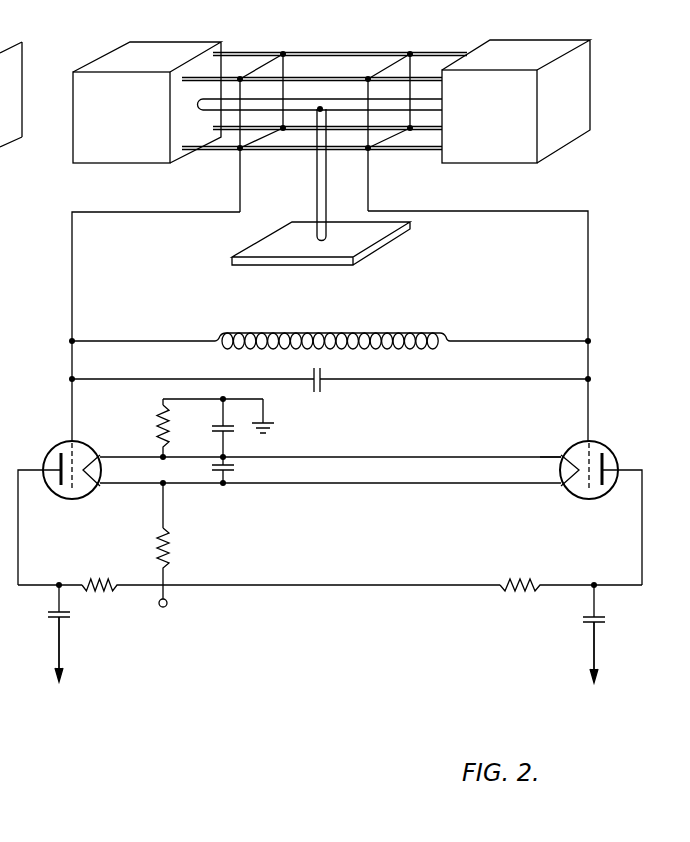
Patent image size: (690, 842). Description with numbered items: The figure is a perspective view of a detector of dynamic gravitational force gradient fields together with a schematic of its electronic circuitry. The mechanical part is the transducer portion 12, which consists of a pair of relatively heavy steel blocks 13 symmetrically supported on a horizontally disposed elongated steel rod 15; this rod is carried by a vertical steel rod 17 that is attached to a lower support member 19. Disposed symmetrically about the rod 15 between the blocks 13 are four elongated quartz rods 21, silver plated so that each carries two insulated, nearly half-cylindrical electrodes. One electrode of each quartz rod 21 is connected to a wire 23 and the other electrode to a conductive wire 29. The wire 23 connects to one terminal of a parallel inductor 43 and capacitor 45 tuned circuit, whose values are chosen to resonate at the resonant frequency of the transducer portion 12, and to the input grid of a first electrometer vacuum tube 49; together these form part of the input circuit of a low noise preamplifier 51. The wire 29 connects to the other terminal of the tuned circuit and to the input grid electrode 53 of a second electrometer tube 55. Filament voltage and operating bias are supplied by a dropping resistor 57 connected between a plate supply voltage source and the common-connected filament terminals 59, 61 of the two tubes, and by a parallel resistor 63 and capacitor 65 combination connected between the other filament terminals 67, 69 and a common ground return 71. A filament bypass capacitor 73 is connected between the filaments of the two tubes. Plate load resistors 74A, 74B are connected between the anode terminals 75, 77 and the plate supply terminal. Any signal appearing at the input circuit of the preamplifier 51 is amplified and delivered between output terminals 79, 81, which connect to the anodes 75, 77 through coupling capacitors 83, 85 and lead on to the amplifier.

The transducer portion 12 is at (338, 74).
The steel blocks 13 is at (163, 53).
The elongated steel rod 15 is at (302, 109).
The vertical steel rod 17 is at (317, 195).
The lower support member 19 is at (261, 240).
The quartz rods 21 is at (248, 74).
The wire 23 is at (168, 212).
The conductive wire 29 is at (497, 211).
The inductor 43 is at (262, 332).
The capacitor 45 is at (322, 371).
The first electrometer vacuum tube 49 is at (53, 450).
The low noise preamplifier 51 is at (308, 514).
The input grid electrode 53 is at (591, 441).
The second electrometer tube 55 is at (611, 449).
The dropping resistor 57 is at (170, 539).
The filament terminal 59 is at (90, 494).
The filament terminal 61 is at (570, 488).
The resistor 63 is at (161, 415).
The capacitor 65 is at (212, 428).
The filament terminal 67 is at (93, 453).
The filament terminal 69 is at (562, 456).
The common ground return 71 is at (267, 416).
The filament bypass capacitor 73 is at (234, 468).
The plate load resistor 74A is at (108, 579).
The plate load resistor 74B is at (534, 581).
The anode terminal 75 is at (30, 467).
The anode terminal 77 is at (622, 473).
The output terminal 79 is at (63, 678).
The output terminal 81 is at (600, 683).
The coupling capacitor 83 is at (47, 618).
The coupling capacitor 85 is at (590, 622).